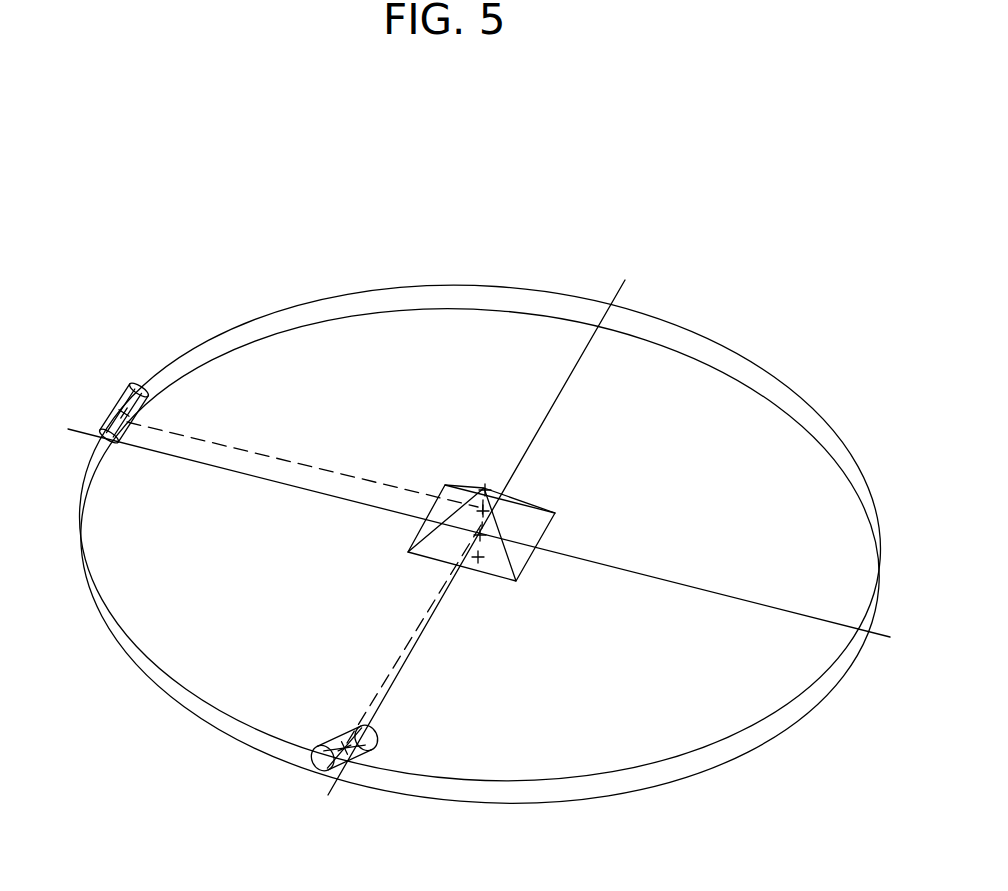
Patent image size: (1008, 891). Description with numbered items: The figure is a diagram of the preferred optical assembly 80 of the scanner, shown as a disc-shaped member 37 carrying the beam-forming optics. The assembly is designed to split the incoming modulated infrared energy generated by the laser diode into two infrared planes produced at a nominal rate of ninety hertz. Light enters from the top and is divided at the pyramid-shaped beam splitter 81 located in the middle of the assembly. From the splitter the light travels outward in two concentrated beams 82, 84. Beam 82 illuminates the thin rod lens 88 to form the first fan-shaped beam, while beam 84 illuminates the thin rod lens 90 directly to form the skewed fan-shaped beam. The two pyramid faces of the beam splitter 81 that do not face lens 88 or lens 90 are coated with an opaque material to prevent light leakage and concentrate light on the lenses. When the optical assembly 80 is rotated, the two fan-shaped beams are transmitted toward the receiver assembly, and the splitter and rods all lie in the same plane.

The disc 37 is at (738, 355).
The optical assembly 80 is at (556, 212).
The pyramid-shaped beam splitter 81 is at (524, 505).
The beam 82 is at (330, 470).
The beam 84 is at (412, 632).
The thin rod lens 88 is at (118, 386).
The thin rod lens 90 is at (357, 753).